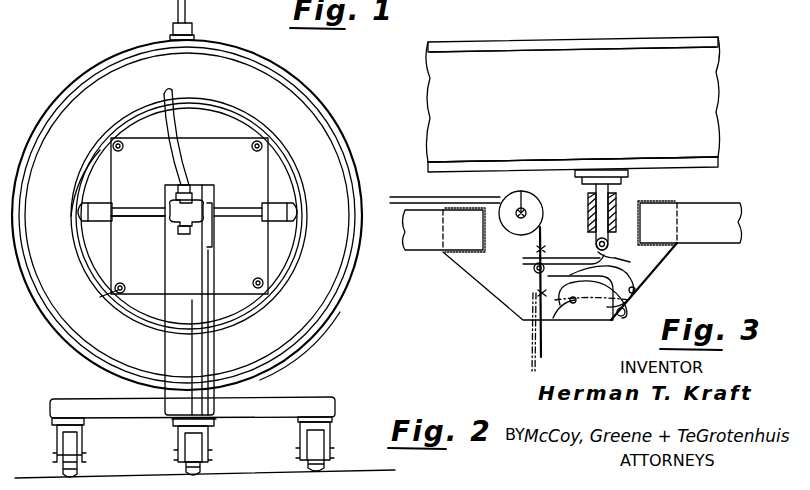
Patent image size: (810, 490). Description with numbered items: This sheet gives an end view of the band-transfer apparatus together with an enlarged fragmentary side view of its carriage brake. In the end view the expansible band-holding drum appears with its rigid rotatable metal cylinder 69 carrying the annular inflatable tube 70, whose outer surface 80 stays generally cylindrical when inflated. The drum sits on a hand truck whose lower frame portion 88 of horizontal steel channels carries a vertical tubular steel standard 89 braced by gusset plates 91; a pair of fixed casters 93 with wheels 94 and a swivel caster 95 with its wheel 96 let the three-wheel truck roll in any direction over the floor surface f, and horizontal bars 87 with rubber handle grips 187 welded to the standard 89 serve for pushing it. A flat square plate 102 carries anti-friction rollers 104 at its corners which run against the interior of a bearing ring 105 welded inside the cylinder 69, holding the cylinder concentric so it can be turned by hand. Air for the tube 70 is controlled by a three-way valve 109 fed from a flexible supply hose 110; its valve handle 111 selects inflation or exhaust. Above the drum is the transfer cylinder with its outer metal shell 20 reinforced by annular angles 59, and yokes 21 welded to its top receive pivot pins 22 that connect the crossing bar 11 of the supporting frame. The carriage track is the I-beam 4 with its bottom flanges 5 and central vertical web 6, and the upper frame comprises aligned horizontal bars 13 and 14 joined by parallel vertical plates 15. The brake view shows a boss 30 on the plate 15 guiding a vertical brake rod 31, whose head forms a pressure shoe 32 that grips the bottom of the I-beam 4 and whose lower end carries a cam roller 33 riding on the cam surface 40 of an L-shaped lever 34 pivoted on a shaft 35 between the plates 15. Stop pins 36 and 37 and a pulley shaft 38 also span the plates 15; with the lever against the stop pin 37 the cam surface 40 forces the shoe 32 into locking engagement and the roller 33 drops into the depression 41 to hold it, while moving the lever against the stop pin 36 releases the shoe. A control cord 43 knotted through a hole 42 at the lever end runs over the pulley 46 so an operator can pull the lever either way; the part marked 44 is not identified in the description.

In FIG. 3, the I-beam 4 is at (618, 38).
In FIG. 3, the bottom flanges 5 is at (487, 163).
In FIG. 3, the central vertical web 6 is at (659, 101).
In FIG. 2, the crossing bar 11 is at (196, 14).
In FIG. 3, the horizontal bar 13 is at (425, 240).
In FIG. 3, the horizontal bar 14 is at (718, 201).
In FIG. 3, the vertical plates 15 is at (478, 278).
In FIG. 2, the outer cylindrical metal shell 20 is at (347, 129).
In FIG. 2, the yokes 21 is at (200, 38).
In FIG. 2, the pivot pin 22 is at (173, 27).
In FIG. 3, the boss 30 is at (636, 194).
In FIG. 3, the brake rod 31 is at (590, 210).
In FIG. 3, the pressure pad or shoe 32 is at (613, 170).
In FIG. 3, the cam roller 33 is at (594, 250).
In FIG. 3, the L-shaped lever 34 is at (650, 305).
In FIG. 3, the pivot pin or shaft 35 is at (619, 320).
In FIG. 3, the stop pin 36 is at (566, 305).
In FIG. 3, the stop pin 37 is at (658, 288).
In FIG. 3, the pulley shaft 38 is at (508, 194).
In FIG. 3, the cam surface 40 is at (676, 258).
In FIG. 3, the depression 41 is at (628, 259).
In FIG. 3, the hole 42 is at (532, 270).
In FIG. 3, the control cord 43 is at (415, 194).
In FIG. 3, the chain 44 is at (535, 252).
In FIG. 3, the pulley 46 is at (523, 182).
In FIG. 2, the annular angles 59 is at (323, 332).
In FIG. 2, the rotatable metal cylinder 69 is at (80, 254).
In FIG. 2, the inflatable tube 70 is at (228, 103).
In FIG. 2, the outer surface 80 is at (293, 150).
In FIG. 2, the horizontal bars 87 is at (130, 207).
In FIG. 2, the lower frame portion 88 is at (283, 400).
In FIG. 2, the vertical tubular steel standard 89 is at (160, 273).
In FIG. 2, the gusset plates 91 is at (162, 350).
In FIG. 2, the fixed casters 93 is at (53, 424).
In FIG. 2, the wheels 94 is at (78, 468).
In FIG. 2, the swivel caster 95 is at (207, 436).
In FIG. 2, the wheel 96 is at (204, 467).
In FIG. 2, the square plate 102 is at (123, 254).
In FIG. 2, the anti-friction rollers 104 is at (122, 149).
In FIG. 2, the bearing ring 105 is at (100, 296).
In FIG. 2, the three-way valve 109 is at (187, 230).
In FIG. 2, the flexible hose 110 is at (165, 98).
In FIG. 2, the valve handle 111 is at (214, 237).
In FIG. 2, the rubber handle grips 187 is at (78, 208).
In FIG. 2, the floor surface f is at (33, 478).